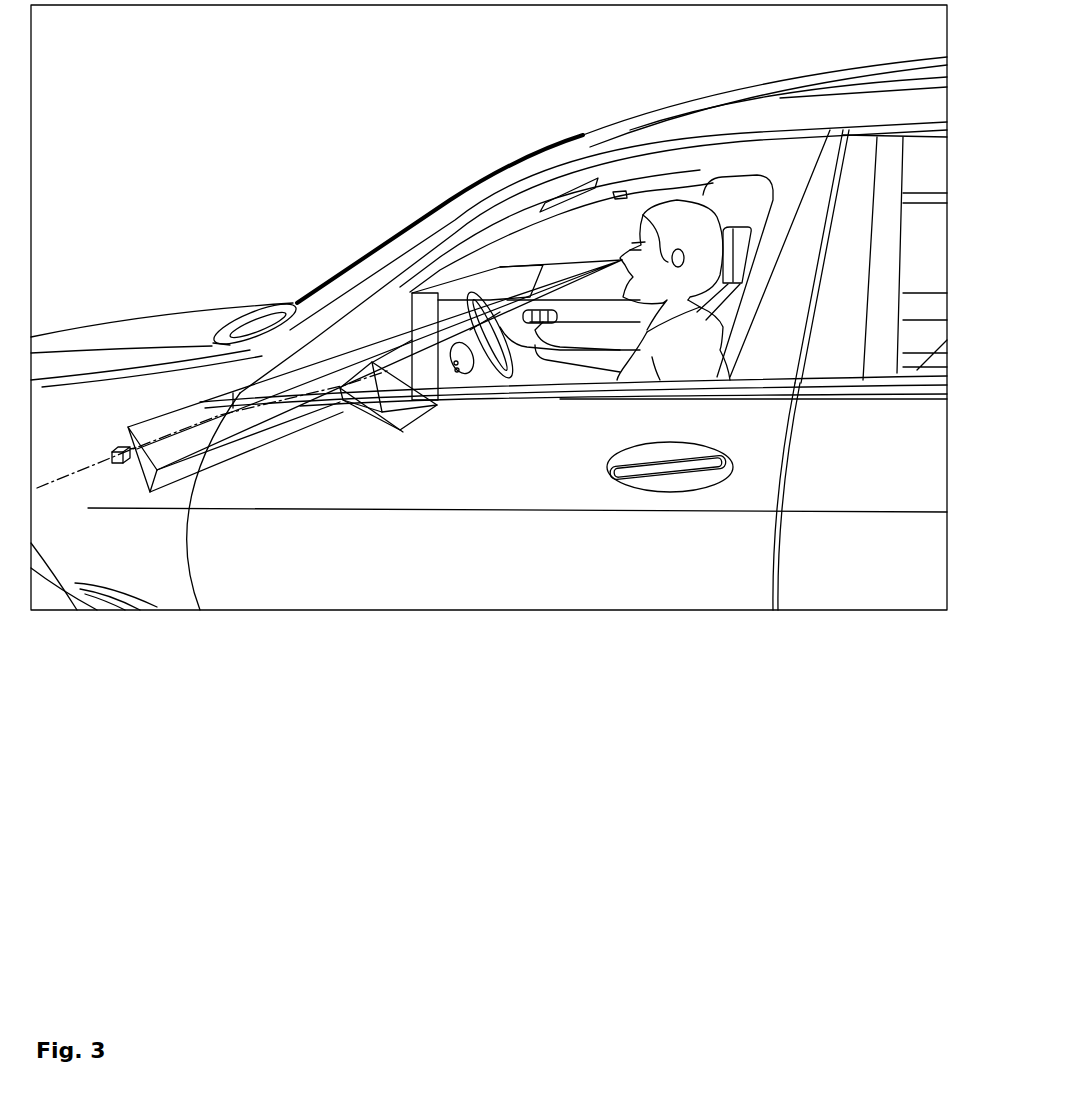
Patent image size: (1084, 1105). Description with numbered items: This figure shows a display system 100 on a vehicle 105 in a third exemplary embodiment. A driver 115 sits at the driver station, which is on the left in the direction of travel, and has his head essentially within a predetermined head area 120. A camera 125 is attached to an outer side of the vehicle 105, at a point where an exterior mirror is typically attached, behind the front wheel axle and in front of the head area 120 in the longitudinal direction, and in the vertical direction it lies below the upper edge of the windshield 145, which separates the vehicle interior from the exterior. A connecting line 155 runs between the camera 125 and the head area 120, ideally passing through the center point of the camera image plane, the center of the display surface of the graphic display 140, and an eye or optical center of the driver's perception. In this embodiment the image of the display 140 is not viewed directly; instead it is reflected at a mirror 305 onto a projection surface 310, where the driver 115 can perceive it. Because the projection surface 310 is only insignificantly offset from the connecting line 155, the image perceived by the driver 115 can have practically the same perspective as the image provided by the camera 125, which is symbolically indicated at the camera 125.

The display system 100 is at (200, 197).
The vehicle 105 is at (285, 306).
The driver 115 is at (700, 217).
The head area 120 is at (673, 200).
The camera 125 is at (119, 446).
The graphic display 140 is at (343, 398).
The windshield 145 is at (436, 198).
The connecting line 155 is at (70, 480).
The mirror 305 is at (412, 400).
The projection surface 310 is at (388, 333).